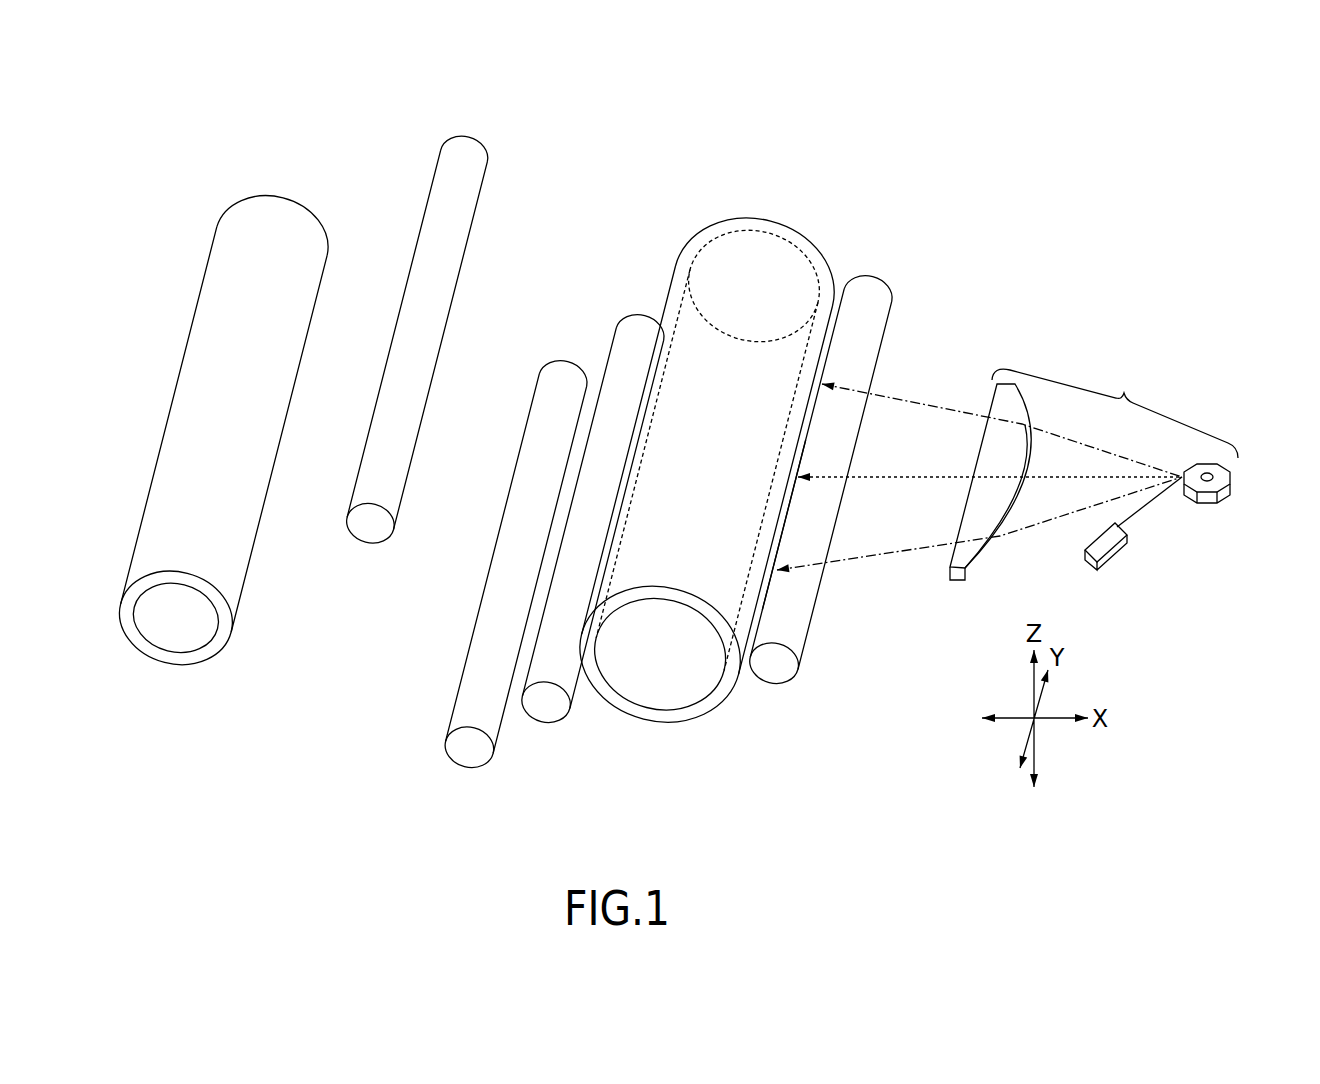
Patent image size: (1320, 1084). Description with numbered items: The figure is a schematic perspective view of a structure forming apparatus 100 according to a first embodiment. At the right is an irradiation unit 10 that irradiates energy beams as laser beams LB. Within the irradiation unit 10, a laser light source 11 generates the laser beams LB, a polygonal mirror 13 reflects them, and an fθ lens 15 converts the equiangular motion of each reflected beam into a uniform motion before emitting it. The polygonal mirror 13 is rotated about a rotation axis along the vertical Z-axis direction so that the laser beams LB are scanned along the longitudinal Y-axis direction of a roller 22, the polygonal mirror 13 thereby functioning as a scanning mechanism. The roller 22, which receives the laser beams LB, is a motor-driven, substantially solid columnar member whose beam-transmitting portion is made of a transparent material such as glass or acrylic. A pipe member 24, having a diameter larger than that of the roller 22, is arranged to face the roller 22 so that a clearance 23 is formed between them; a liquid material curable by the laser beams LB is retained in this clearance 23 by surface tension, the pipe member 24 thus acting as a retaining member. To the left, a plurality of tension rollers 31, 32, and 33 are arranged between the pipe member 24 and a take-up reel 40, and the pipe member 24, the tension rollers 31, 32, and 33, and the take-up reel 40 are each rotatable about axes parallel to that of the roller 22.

The structure forming apparatus 100 is at (614, 158).
The take-up reel 40 is at (268, 213).
The tension roller 33 is at (368, 530).
The tension roller 32 is at (467, 750).
The tension roller 31 is at (546, 705).
The pipe member 24 is at (760, 222).
The clearance 23 is at (788, 516).
The roller 22 is at (868, 292).
The laser beams LB is at (918, 475).
The fθ lens 15 is at (967, 553).
The irradiation unit 10 is at (1115, 409).
The polygonal mirror 13 is at (1232, 493).
The laser light source 11 is at (1115, 548).